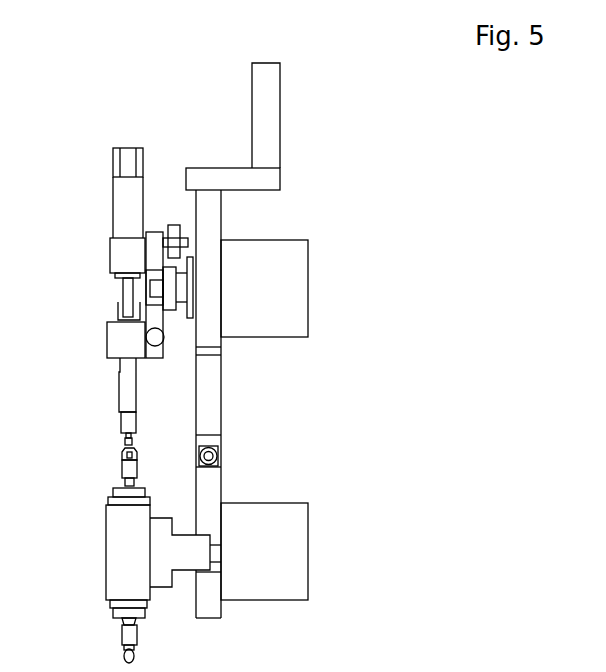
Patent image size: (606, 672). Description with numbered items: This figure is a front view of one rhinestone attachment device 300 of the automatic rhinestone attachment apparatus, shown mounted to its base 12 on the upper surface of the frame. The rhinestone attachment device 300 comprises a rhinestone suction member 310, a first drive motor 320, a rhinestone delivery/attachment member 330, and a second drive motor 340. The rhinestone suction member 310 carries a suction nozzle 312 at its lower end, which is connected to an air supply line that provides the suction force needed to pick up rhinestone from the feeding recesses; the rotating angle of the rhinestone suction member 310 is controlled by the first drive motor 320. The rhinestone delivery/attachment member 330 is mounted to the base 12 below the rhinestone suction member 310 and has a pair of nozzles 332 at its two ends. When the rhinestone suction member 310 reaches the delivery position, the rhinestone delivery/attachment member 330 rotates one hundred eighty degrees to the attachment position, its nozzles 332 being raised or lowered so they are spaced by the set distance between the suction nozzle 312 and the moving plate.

The base 12 is at (212, 395).
The rhinestone attachment device 300 is at (126, 131).
The rhinestone suction member 310 is at (118, 258).
The suction nozzle 312 is at (120, 443).
The first drive motor 320 is at (293, 288).
The rhinestone delivery/attachment member 330 is at (105, 555).
The nozzle 332 is at (120, 455).
The second drive motor 340 is at (300, 549).